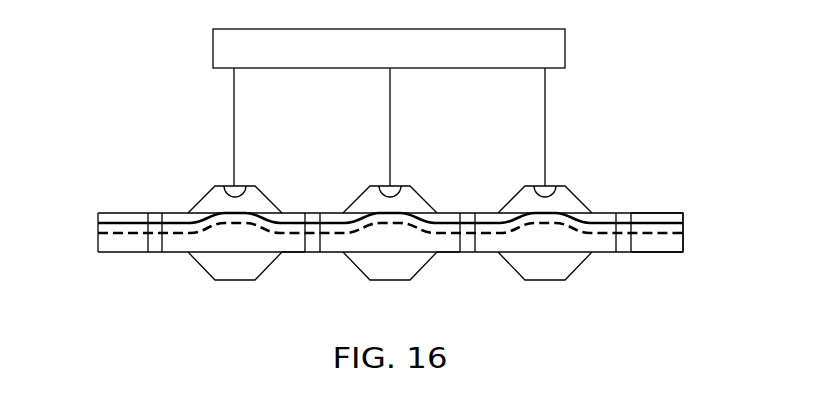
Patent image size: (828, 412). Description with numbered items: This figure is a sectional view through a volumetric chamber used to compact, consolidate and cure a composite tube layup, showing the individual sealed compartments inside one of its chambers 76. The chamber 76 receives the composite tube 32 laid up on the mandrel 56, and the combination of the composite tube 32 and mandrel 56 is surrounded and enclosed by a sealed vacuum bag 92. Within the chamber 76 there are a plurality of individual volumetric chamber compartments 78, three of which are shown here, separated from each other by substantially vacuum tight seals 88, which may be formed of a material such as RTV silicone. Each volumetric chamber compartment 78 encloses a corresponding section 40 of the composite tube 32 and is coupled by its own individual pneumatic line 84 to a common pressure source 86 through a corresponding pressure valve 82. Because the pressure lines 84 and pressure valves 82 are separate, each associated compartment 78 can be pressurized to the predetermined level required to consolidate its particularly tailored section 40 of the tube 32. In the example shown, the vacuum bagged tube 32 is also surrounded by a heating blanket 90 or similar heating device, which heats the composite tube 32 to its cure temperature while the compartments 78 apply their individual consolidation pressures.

The pressure source 86 is at (213, 48).
The pneumatic line 84 is at (234, 100).
The pressure valve 82 is at (230, 189).
The chamber 76 is at (84, 255).
The composite tube 32 is at (386, 215).
The mandrel 56 is at (127, 237).
The volumetric chamber compartment 78 is at (205, 261).
The vacuum tight seal 88 is at (155, 217).
The heating blanket 90 is at (663, 220).
The vacuum bag 92 is at (290, 236).
The section 40 is at (234, 242).